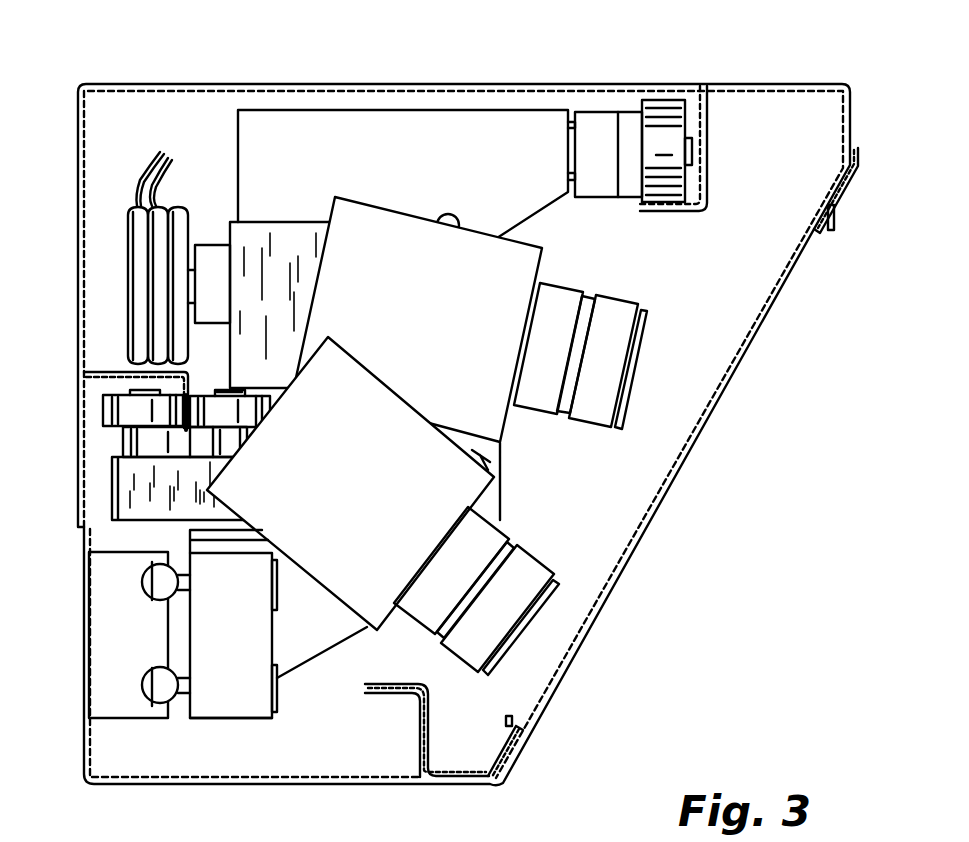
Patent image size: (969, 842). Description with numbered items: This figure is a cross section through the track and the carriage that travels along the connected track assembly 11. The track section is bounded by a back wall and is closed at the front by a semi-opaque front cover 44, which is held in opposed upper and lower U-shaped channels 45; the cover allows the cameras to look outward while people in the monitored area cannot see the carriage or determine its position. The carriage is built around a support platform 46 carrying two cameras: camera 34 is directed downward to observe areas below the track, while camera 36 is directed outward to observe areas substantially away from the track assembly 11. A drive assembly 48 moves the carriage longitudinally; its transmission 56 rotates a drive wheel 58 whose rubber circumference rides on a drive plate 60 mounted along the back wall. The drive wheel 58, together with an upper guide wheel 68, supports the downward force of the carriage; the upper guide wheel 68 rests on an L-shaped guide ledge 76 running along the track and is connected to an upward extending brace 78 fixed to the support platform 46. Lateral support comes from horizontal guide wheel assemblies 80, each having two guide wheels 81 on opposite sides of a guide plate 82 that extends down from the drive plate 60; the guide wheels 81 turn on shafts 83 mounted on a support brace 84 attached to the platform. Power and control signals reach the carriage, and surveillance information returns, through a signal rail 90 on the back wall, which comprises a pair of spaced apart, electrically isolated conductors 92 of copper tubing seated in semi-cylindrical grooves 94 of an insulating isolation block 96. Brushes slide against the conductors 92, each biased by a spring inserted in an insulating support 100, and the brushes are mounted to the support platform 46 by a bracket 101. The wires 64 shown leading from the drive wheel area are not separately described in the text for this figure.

The connected track assembly 11 is at (444, 434).
The camera 34 is at (545, 619).
The camera 36 is at (647, 367).
The semi-opaque front cover 44 is at (675, 454).
The U-shaped channels 45 is at (819, 231).
The support platform 46 is at (497, 497).
The drive assembly 48 is at (257, 221).
The transmission 56 is at (300, 222).
The drive wheel 58 is at (129, 243).
The drive plate 60 is at (105, 371).
The wires 64 is at (169, 172).
The upper guide wheel 68 is at (628, 205).
The L-shaped guide ledge 76 is at (688, 208).
The upward extending brace 78 is at (497, 130).
The horizontal guide wheel assemblies 80 is at (186, 432).
The guide wheels 81 is at (119, 440).
The guide plate 82 is at (190, 373).
The shafts 83 is at (240, 385).
The support brace 84 is at (125, 500).
The signal rail 90 is at (173, 625).
The conductors 92 is at (142, 583).
The semi-cylindrical grooves 94 is at (143, 567).
The isolation block 96 is at (120, 638).
The support 100 is at (235, 708).
The bracket 101 is at (348, 639).